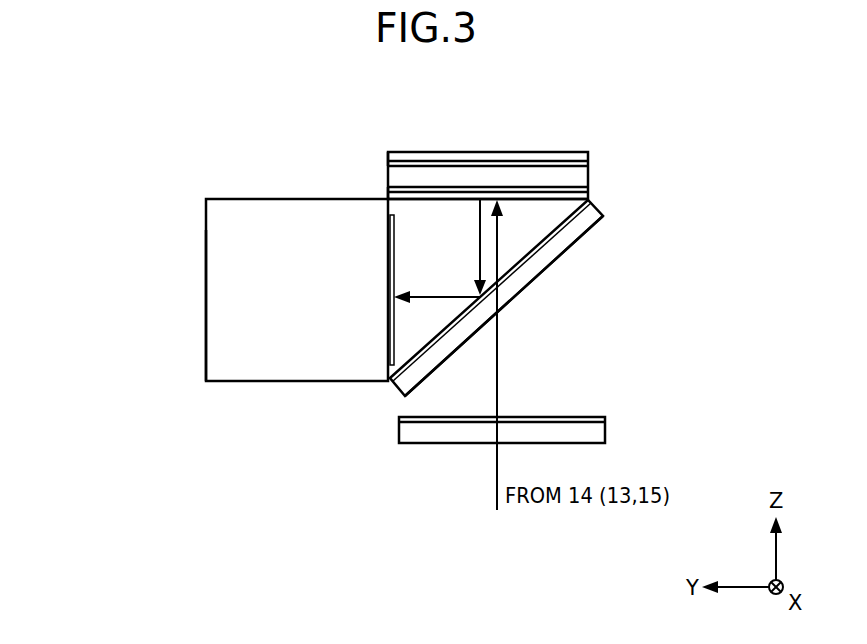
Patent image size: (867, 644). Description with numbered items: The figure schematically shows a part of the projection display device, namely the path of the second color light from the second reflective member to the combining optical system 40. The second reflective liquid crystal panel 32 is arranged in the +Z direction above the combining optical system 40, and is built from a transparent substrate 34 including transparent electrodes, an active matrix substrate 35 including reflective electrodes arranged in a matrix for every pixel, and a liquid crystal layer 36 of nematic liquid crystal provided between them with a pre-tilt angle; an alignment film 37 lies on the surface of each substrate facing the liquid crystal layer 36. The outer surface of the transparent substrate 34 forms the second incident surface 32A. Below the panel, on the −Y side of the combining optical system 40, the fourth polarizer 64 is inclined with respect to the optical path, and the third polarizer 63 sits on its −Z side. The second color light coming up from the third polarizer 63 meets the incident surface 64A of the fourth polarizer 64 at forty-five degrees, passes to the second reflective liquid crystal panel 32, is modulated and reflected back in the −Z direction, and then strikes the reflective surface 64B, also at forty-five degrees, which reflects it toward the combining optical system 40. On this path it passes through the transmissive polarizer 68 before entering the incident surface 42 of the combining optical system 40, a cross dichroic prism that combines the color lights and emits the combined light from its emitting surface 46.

The second reflective liquid crystal panel 32 is at (589, 173).
The second incident surface 32A is at (440, 200).
The transparent substrate 34 is at (388, 193).
The active matrix substrate 35 is at (388, 155).
The liquid crystal layer 36 is at (388, 164).
The alignment film 37 is at (589, 163).
The combining optical system 40 is at (227, 199).
The incident surface 42 is at (390, 267).
The emitting surface 46 is at (206, 313).
The third polarizer 63 is at (605, 431).
The fourth polarizer 64 is at (599, 209).
The incident surface 64A is at (537, 283).
The reflective surface 64B is at (513, 268).
The transmissive polarizer 68 is at (388, 345).